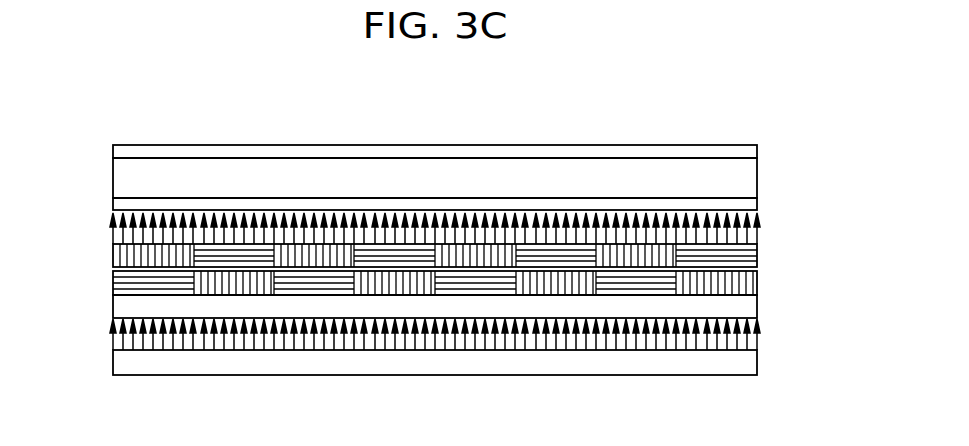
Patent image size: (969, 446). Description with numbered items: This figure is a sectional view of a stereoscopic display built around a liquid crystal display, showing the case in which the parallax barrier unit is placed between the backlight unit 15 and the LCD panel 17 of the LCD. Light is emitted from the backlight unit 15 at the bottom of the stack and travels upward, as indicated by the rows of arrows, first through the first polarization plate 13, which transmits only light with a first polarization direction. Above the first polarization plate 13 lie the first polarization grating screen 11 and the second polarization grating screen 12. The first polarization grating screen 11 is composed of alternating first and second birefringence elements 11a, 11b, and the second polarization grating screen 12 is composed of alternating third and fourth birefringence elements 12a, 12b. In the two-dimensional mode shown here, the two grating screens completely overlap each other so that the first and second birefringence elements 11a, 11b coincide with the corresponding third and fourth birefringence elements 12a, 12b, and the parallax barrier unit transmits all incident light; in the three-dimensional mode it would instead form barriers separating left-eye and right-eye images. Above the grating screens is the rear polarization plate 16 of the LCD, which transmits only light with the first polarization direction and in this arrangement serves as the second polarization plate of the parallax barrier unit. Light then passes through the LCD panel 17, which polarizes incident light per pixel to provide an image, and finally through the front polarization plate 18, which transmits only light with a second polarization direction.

The front polarization plate 18 is at (747, 150).
The LCD panel 17 is at (747, 173).
The rear polarization plate 16 is at (747, 202).
The second polarization grating screen 12 is at (475, 178).
The third birefringence element 12a is at (158, 255).
The fourth birefringence element 12b is at (240, 255).
The first polarization grating screen 11 is at (475, 347).
The first birefringence element 11a is at (155, 285).
The second birefringence element 11b is at (238, 285).
The first polarization plate 13 is at (748, 303).
The backlight unit 15 is at (748, 357).